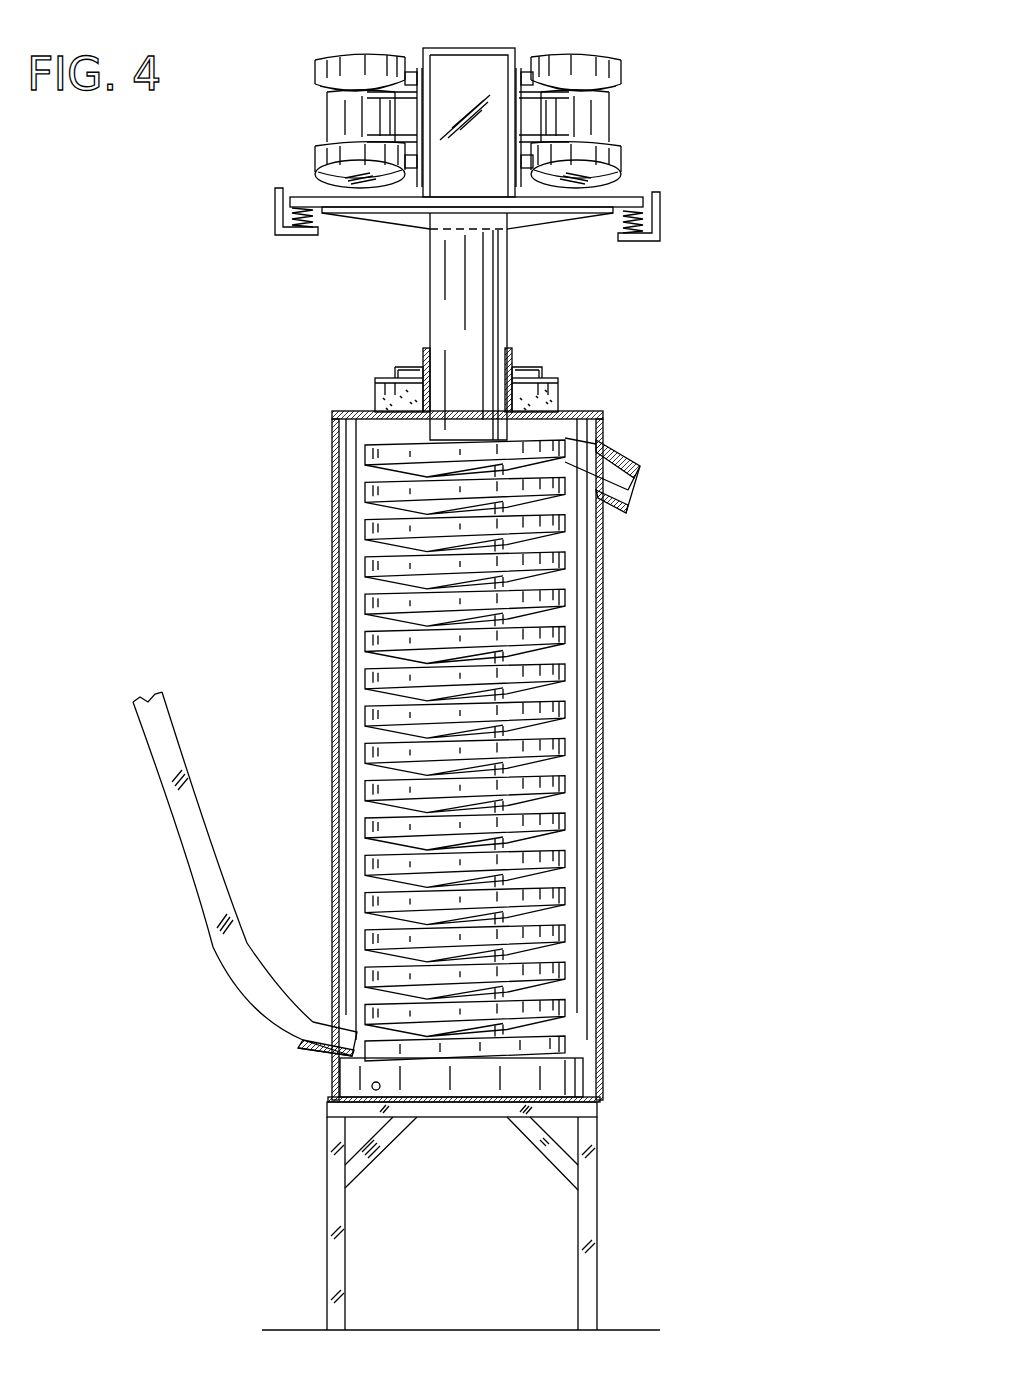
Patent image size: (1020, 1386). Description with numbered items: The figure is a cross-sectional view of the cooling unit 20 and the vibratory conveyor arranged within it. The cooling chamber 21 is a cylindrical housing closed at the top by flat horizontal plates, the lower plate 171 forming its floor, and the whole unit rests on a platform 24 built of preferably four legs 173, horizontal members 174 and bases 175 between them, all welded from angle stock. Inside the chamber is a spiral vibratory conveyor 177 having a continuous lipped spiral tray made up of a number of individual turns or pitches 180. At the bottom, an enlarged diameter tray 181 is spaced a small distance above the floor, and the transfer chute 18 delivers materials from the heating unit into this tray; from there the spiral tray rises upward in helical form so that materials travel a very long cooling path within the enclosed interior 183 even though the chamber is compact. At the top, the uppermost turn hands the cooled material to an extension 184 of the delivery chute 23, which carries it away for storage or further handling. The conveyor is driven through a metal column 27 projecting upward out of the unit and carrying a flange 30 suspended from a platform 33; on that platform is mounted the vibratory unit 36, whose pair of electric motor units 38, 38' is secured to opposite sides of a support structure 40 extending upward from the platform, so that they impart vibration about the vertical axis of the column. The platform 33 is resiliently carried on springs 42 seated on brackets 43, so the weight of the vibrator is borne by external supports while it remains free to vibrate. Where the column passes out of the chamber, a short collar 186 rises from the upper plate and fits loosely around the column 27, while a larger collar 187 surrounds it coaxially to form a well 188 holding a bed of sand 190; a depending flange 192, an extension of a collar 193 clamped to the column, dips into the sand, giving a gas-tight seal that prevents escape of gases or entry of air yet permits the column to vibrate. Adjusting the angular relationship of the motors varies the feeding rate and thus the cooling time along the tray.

The transfer chute 18 is at (200, 806).
The cooling unit 20 is at (655, 1013).
The cooling chamber 21 is at (332, 675).
The delivery chute 23 is at (627, 460).
The platform 24 is at (307, 1228).
The column 27 is at (510, 318).
The flange 30 is at (540, 240).
The platform 33 is at (625, 198).
The vibratory unit 36 is at (298, 50).
The electric motor unit 38 is at (317, 121).
The electric motor unit 38' is at (613, 121).
The support structure 40 is at (502, 48).
The spring 42 is at (290, 216).
The bracket 43 is at (292, 235).
The lower plate 171 is at (480, 1100).
The leg 173 is at (347, 1265).
The horizontal member 174 is at (430, 1117).
The base 175 is at (373, 1167).
The spiral vibratory conveyor 177 is at (577, 868).
The turn 180 is at (565, 598).
The enlarged diameter tray 181 is at (585, 1070).
The enclosed interior 183 is at (355, 518).
The extension 184 is at (610, 433).
The collar 186 is at (423, 365).
The collar 187 is at (556, 392).
The well 188 is at (397, 372).
The bed of sand 190 is at (378, 396).
The depending flange 192 is at (543, 375).
The collar 193 is at (513, 358).